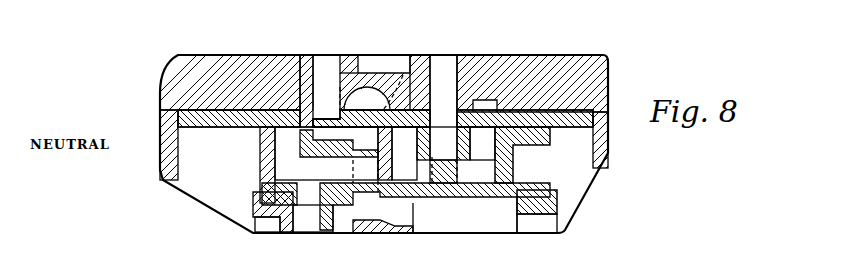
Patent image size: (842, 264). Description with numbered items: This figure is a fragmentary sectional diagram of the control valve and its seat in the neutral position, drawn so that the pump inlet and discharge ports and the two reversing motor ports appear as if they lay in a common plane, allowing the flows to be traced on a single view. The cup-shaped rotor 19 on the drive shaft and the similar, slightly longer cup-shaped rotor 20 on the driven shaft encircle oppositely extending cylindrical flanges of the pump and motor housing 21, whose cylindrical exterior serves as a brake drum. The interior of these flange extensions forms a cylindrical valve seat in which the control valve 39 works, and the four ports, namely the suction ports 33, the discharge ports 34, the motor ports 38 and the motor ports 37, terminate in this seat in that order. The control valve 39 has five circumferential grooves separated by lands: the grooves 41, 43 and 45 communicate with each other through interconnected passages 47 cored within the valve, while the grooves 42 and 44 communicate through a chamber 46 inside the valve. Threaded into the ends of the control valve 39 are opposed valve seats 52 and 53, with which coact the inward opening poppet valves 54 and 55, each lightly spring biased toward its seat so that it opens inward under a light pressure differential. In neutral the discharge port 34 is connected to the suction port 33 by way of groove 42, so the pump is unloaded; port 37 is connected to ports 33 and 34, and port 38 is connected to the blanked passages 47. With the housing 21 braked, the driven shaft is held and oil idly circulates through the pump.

The cup-shaped rotor 19 is at (183, 63).
The cup-shaped rotor 20 is at (556, 57).
The pump and motor housing 21 is at (366, 73).
The inlet ports 33 is at (328, 94).
The discharge ports 34 is at (367, 98).
The motor ports 37 is at (444, 62).
The motor ports 38 is at (400, 73).
The control valve 39 is at (260, 168).
The groove 41 is at (262, 132).
The groove 42 is at (326, 159).
The groove 43 is at (393, 137).
The groove 44 is at (450, 146).
The groove 45 is at (490, 146).
The chamber 46 is at (450, 227).
The interconnected passages 47 is at (408, 181).
The valve seat 52 is at (254, 203).
The valve seat 53 is at (560, 203).
The poppet valve 54 is at (287, 233).
The poppet valve 55 is at (522, 233).